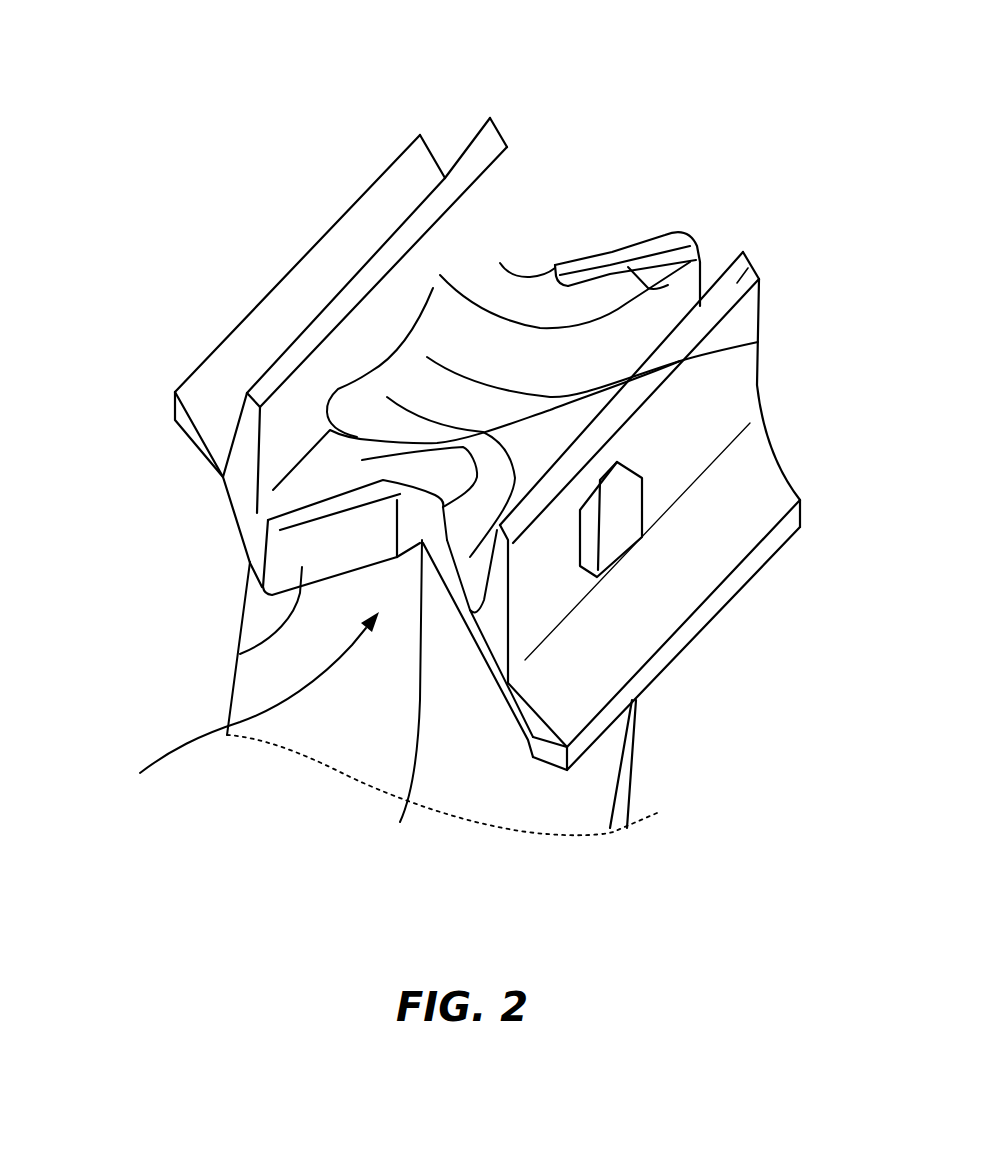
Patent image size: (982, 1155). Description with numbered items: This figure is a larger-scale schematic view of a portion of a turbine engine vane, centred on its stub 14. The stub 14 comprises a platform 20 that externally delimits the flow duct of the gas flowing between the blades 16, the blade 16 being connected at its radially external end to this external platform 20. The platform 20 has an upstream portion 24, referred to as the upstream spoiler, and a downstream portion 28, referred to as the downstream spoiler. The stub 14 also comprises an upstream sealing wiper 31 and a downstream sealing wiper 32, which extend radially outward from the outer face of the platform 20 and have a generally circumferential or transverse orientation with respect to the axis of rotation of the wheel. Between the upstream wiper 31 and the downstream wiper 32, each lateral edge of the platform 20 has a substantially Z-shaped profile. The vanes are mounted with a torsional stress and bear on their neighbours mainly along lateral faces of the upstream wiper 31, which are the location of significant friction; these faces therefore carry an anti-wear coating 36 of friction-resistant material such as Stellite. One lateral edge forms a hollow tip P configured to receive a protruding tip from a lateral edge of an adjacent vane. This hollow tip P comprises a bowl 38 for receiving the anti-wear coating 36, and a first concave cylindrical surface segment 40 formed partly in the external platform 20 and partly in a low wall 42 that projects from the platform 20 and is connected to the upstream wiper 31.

The stub 14 is at (205, 553).
The blade 16 is at (347, 710).
The platform 20 is at (500, 263).
The upstream portion 24 is at (287, 310).
The downstream portion 28 is at (697, 563).
The upstream sealing wiper 31 is at (498, 288).
The downstream sealing wiper 32 is at (750, 250).
The anti-wear coating 36 is at (610, 245).
The bowl 38 is at (698, 257).
The first concave cylindrical surface segment 40 is at (400, 822).
The low wall 42 is at (758, 342).
The hollow tip P is at (254, 724).